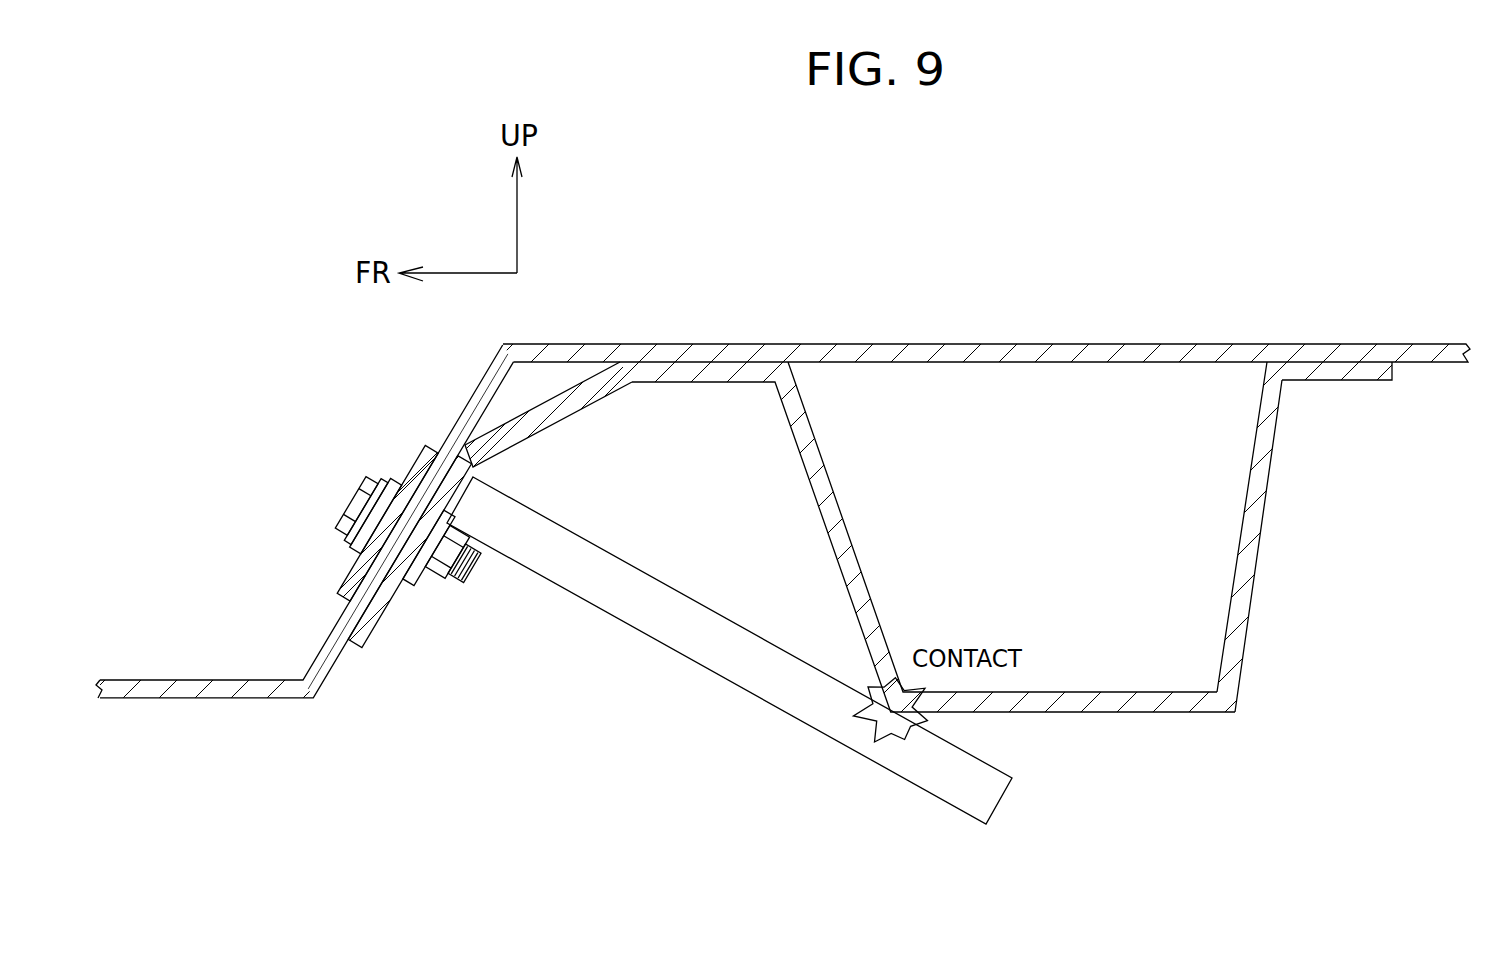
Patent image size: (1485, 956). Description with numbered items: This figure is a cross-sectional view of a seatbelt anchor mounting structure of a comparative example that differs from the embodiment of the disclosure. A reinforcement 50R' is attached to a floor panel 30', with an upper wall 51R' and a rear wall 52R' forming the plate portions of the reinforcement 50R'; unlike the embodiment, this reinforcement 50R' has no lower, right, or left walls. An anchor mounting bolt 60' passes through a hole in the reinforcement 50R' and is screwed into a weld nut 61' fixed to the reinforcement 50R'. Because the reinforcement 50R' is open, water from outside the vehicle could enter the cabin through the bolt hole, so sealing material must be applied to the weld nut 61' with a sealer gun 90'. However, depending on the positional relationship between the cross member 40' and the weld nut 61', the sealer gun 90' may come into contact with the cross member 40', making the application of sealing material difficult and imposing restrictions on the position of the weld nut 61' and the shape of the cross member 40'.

The floor panel 30' is at (742, 478).
The cross member 40' is at (742, 478).
The reinforcement 50R' is at (742, 478).
The upper wall 51R' is at (557, 478).
The rear wall 52R' is at (742, 478).
The anchor mounting bolt 60' is at (324, 520).
The weld nut 61' is at (442, 581).
The sealer gun 90' is at (729, 650).